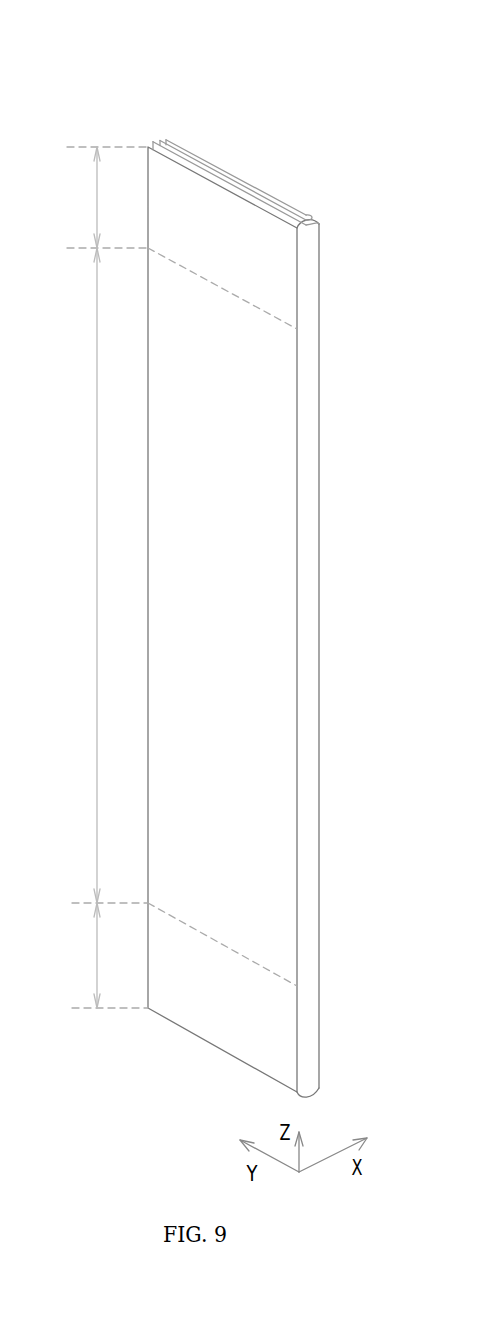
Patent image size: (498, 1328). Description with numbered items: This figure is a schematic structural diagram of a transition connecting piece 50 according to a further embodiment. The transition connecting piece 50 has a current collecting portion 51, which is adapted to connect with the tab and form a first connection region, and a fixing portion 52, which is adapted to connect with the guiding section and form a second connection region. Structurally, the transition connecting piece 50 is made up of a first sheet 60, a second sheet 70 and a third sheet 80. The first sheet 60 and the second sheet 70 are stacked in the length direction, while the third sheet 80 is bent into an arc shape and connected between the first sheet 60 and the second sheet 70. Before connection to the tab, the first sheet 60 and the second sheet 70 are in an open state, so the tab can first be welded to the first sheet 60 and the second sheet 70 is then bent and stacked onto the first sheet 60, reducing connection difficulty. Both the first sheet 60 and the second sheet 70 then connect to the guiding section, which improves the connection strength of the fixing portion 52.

The transition connecting piece 50 is at (255, 43).
The current collecting portion 51 is at (79, 575).
The fixing portion 52 is at (78, 577).
The first sheet 60 is at (197, 170).
The second sheet 70 is at (217, 163).
The third sheet 80 is at (303, 677).